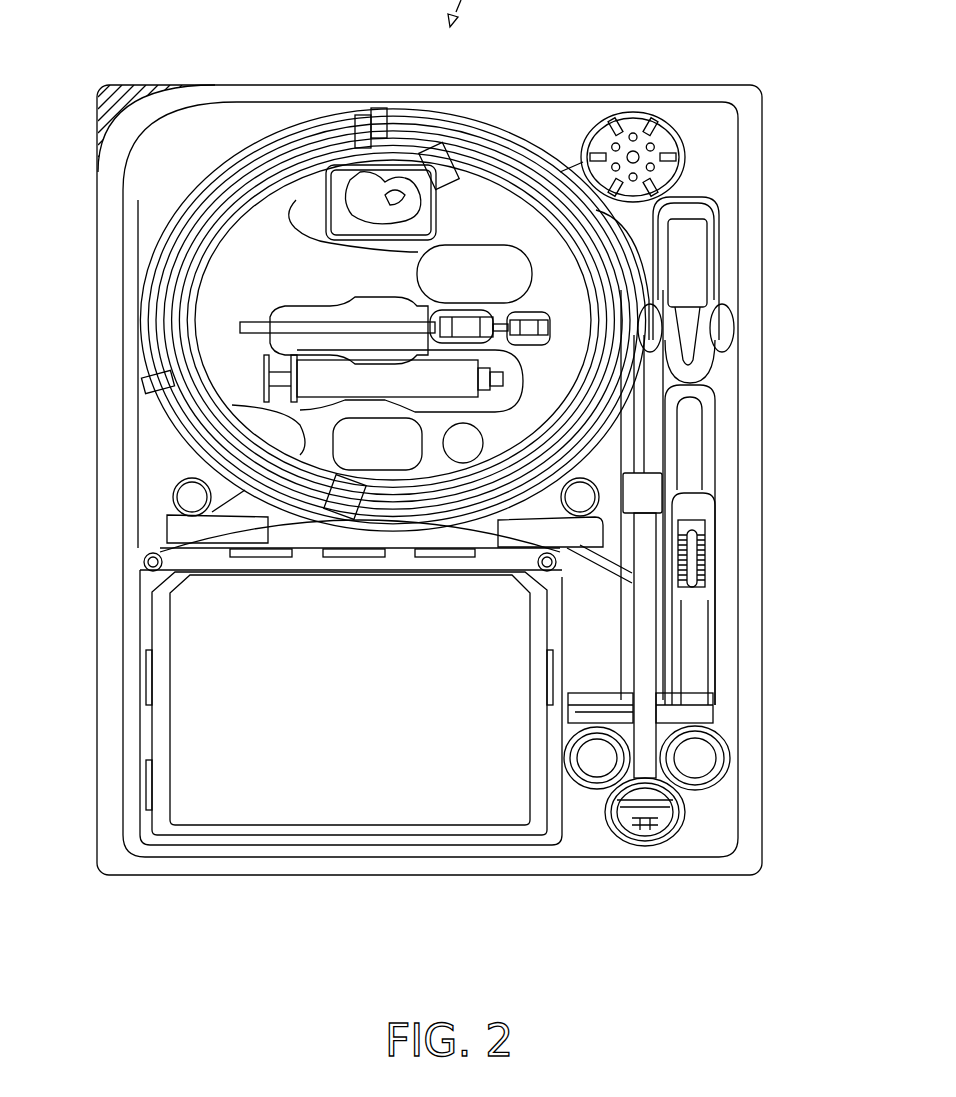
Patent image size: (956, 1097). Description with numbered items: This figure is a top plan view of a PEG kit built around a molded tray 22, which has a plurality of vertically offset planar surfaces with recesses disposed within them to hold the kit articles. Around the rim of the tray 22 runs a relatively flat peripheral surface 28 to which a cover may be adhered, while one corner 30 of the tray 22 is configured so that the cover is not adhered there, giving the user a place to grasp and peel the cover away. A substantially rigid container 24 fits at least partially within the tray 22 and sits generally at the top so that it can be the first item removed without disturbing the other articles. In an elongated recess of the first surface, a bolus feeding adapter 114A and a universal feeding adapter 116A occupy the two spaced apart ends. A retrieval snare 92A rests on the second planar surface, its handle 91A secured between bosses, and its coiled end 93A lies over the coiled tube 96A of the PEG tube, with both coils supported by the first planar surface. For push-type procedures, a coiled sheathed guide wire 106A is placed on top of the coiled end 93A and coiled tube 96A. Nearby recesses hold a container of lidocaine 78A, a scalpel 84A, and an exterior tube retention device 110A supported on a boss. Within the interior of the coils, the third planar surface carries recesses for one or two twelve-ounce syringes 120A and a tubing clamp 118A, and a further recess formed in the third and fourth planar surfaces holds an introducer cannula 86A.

The tray 22 is at (450, 82).
The container 24 is at (195, 771).
The peripheral surface 28 is at (318, 96).
The corner 30 is at (138, 103).
The container of lidocaine 78A is at (690, 255).
The scalpel 84A is at (690, 550).
The introducer cannula 86A is at (328, 325).
The handle 91A is at (733, 764).
The retrieval snare 92A is at (645, 632).
The coiled end 93A is at (440, 175).
The coiled tube 96A is at (362, 118).
The coiled sheathed guide wire 106A is at (155, 380).
The exterior tube retention device 110A is at (667, 122).
The bolus feeding adapter 114A is at (537, 530).
The universal feeding adapter 116A is at (197, 528).
The tubing clamp 118A is at (328, 216).
The syringes 120A is at (343, 378).